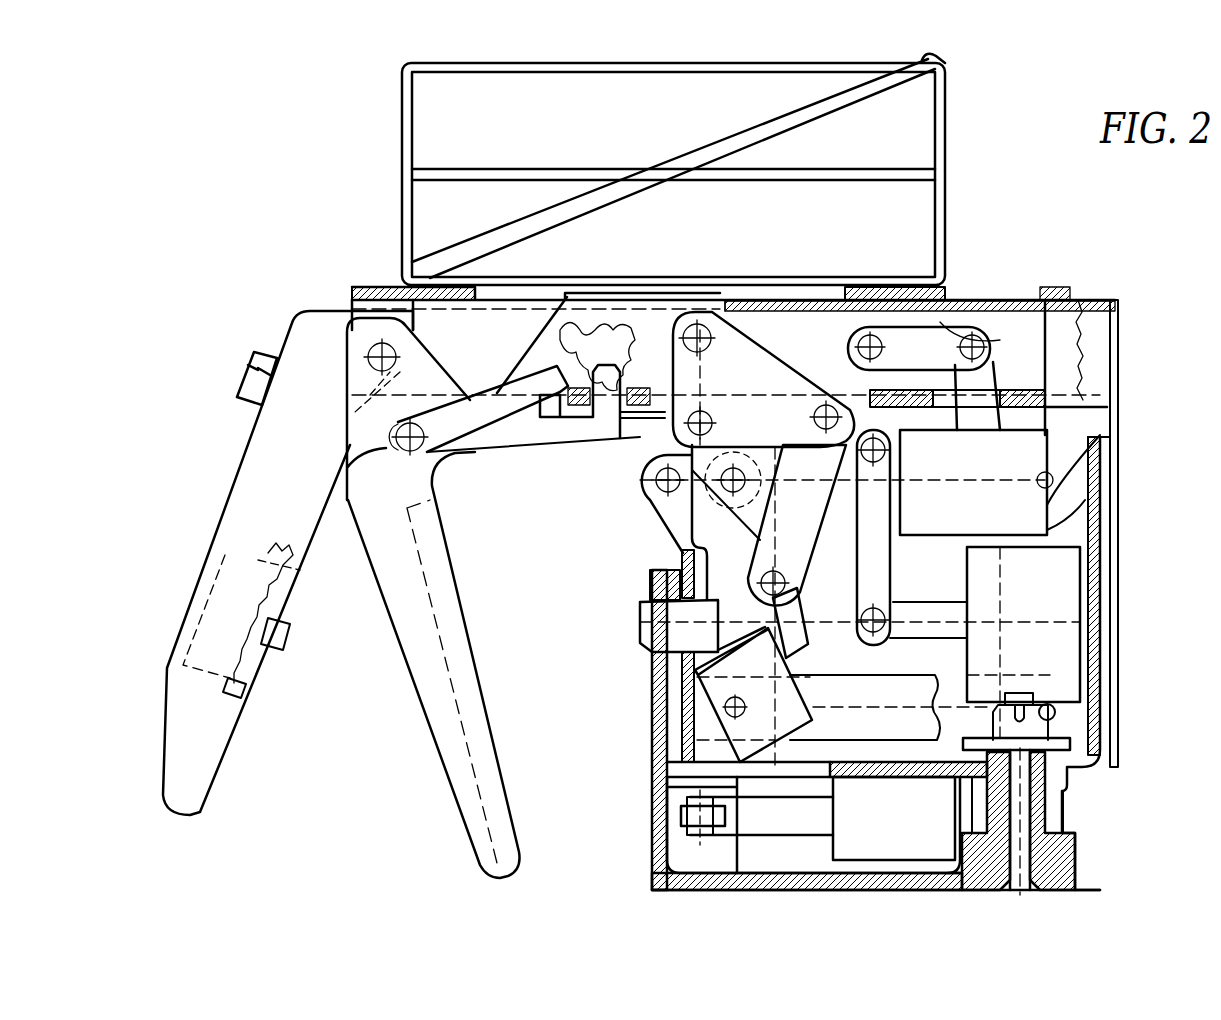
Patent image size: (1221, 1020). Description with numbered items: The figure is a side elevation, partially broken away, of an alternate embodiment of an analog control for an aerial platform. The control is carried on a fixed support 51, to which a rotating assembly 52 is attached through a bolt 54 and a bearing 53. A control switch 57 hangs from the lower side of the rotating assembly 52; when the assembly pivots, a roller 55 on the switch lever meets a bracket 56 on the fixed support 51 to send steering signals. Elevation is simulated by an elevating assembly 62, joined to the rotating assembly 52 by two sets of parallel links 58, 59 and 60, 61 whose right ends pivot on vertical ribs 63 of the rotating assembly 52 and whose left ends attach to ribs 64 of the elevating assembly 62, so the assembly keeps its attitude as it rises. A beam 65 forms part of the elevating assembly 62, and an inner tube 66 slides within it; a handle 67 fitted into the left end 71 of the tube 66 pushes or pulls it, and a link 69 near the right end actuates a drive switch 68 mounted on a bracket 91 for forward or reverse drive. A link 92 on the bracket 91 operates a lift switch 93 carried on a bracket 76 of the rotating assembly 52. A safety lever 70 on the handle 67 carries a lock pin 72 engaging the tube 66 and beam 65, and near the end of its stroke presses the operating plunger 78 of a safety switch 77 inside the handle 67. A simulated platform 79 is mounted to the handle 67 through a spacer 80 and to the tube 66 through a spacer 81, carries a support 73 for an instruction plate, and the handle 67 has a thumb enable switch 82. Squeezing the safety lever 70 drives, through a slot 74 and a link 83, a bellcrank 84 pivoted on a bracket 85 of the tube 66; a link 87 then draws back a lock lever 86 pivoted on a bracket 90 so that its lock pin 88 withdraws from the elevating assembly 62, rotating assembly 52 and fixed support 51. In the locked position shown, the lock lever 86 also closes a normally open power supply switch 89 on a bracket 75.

The fixed support 51 is at (655, 620).
The rotating assembly 52 is at (665, 592).
The bearing 53 is at (1068, 822).
The bolt 54 is at (1025, 892).
The roller 55 is at (712, 830).
The bracket 56 is at (742, 792).
The control switch 57 is at (870, 862).
The parallel link 58 is at (882, 668).
The parallel link 59 is at (1016, 648).
The parallel link 60 is at (805, 518).
The parallel link 61 is at (802, 578).
The elevating assembly 62 is at (680, 566).
The vertical ribs 63 is at (1112, 427).
The ribs 64 is at (790, 455).
The beam 65 is at (672, 290).
The inner tube 66 is at (990, 301).
The handle 67 is at (225, 484).
The drive switch 68 is at (995, 375).
The link 69 is at (940, 322).
The safety lever 70 is at (487, 648).
The left end 71 is at (356, 298).
The lock pin 72 is at (580, 360).
The support 73 is at (690, 150).
The slot 74 is at (341, 470).
The bracket 75 is at (665, 773).
The bracket 76 is at (1100, 500).
The safety switch 77 is at (287, 562).
The operating plunger 78 is at (286, 632).
The simulated platform 79 is at (403, 165).
The spacer 80 is at (378, 287).
The spacer 81 is at (895, 288).
The enable switch 82 is at (255, 372).
The link 83 is at (453, 440).
The bellcrank 84 is at (656, 470).
The bracket 85 is at (650, 425).
The lock lever 86 is at (688, 546).
The link 87 is at (798, 590).
The lock pin 88 is at (640, 627).
The power supply switch 89 is at (800, 680).
The bracket 90 is at (678, 520).
The bracket 91 is at (1100, 433).
The link 92 is at (893, 590).
The lift switch 93 is at (965, 573).